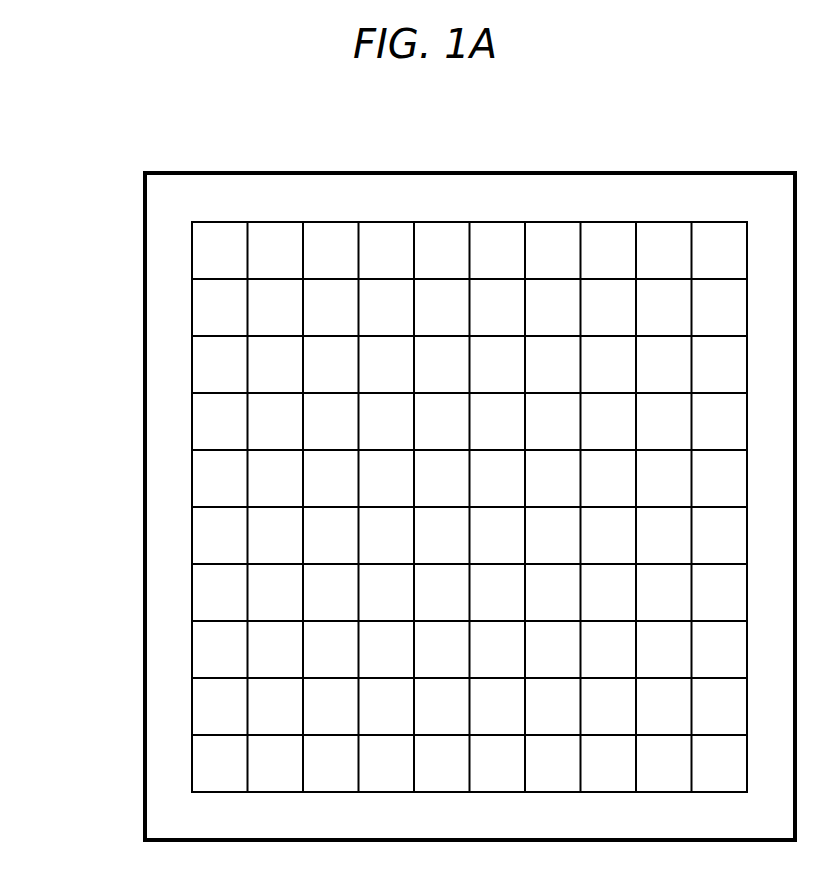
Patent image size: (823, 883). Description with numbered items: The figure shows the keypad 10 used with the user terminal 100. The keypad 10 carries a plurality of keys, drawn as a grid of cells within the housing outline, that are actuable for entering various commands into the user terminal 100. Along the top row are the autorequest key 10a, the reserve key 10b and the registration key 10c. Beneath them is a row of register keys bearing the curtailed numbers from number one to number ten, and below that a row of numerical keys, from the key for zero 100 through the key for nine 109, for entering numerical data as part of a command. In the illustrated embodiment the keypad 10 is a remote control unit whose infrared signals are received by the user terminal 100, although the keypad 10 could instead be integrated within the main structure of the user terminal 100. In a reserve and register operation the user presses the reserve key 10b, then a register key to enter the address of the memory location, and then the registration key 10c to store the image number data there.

The keypad 10 is at (452, 134).
The autorequest key 10a is at (212, 222).
The reserve key 10b is at (270, 222).
The registration key 10c is at (331, 222).
The user terminal 100 is at (190, 370).
The numerical key 109 is at (429, 390).